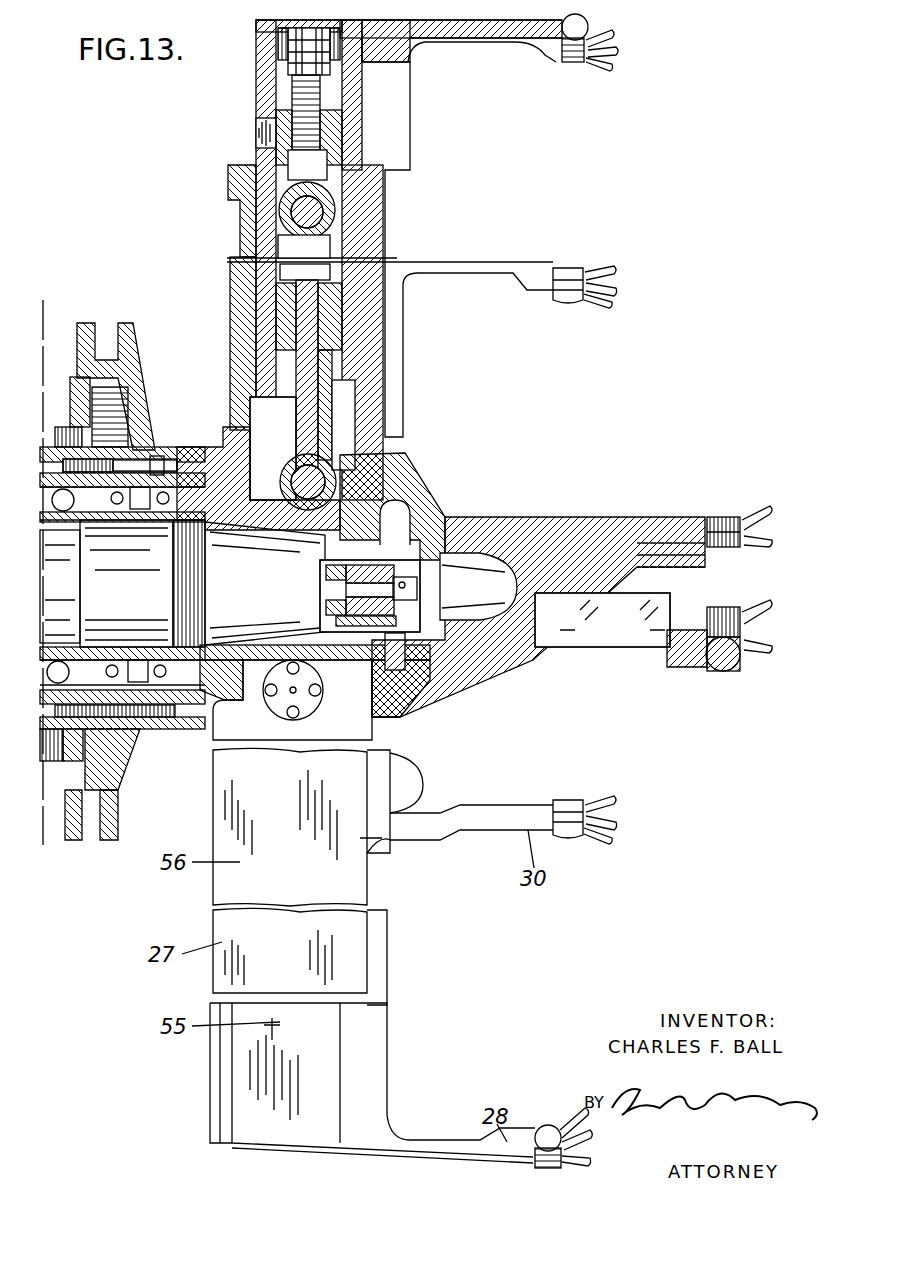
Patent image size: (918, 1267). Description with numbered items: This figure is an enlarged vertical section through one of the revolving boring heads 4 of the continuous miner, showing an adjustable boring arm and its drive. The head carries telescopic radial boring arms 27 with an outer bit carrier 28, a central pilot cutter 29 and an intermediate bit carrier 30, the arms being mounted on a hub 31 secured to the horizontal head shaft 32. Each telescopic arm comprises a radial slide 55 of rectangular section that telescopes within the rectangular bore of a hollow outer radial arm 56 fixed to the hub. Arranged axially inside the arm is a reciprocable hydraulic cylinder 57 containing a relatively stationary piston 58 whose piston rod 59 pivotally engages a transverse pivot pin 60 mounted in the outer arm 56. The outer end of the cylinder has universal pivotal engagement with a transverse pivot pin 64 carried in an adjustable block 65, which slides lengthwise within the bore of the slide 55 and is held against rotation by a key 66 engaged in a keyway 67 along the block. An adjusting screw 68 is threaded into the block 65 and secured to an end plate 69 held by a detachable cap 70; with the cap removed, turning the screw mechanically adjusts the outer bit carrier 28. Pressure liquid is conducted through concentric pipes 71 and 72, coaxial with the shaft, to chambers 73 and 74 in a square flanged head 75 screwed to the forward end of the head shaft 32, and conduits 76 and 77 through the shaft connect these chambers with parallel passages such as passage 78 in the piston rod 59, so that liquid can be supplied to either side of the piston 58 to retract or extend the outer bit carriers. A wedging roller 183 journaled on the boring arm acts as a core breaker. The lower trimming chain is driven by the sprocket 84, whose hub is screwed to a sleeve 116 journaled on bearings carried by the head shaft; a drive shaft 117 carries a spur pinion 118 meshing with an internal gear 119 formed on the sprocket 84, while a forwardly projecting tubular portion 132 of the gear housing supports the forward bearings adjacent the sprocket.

The boring head 4 is at (402, 1049).
The telescopic radial boring arm 27 is at (232, 218).
The outer cutter support or bit carrier 28 is at (532, 28).
The central pilot cutter 29 is at (742, 555).
The intermediate cutter support or bit carrier 30 is at (546, 283).
The hub 31 is at (350, 518).
The head shaft 32 is at (258, 612).
The radial slide 55 is at (262, 300).
The outer radial arm 56 is at (365, 312).
The hydraulic cylinder 57 is at (278, 270).
The piston 58 is at (423, 258).
The piston rod 59 is at (315, 375).
The transverse pivot pin 60 is at (310, 480).
The transverse pivot pin 64 is at (310, 212).
The adjustable block 65 is at (292, 164).
The key 66 is at (268, 128).
The keyway 67 is at (280, 152).
The adjusting screw 68 is at (302, 86).
The end plate 69 is at (300, 40).
The detachable cap 70 is at (310, 26).
The concentric pipe 71 is at (330, 572).
The concentric pipe 72 is at (335, 598).
The chamber 73 is at (404, 590).
The chamber 74 is at (350, 610).
The flanged head 75 is at (420, 553).
The conduit 76 is at (405, 520).
The conduit 77 is at (395, 665).
The passage 78 is at (300, 425).
The chain sprocket 84 is at (86, 340).
The sleeve 116 is at (150, 480).
The drive shaft 117 is at (70, 745).
The spur pinion 118 is at (108, 748).
The internal gear 119 is at (110, 395).
The tubular portion 132 is at (55, 440).
The wedging roller 183 is at (398, 780).